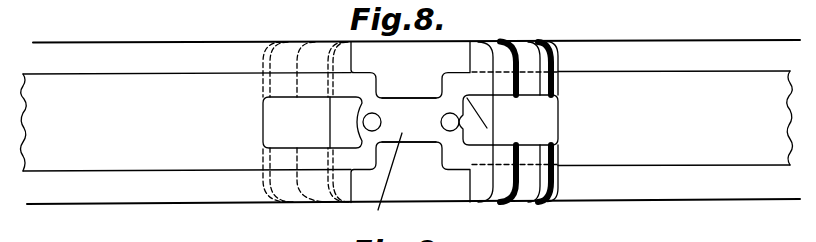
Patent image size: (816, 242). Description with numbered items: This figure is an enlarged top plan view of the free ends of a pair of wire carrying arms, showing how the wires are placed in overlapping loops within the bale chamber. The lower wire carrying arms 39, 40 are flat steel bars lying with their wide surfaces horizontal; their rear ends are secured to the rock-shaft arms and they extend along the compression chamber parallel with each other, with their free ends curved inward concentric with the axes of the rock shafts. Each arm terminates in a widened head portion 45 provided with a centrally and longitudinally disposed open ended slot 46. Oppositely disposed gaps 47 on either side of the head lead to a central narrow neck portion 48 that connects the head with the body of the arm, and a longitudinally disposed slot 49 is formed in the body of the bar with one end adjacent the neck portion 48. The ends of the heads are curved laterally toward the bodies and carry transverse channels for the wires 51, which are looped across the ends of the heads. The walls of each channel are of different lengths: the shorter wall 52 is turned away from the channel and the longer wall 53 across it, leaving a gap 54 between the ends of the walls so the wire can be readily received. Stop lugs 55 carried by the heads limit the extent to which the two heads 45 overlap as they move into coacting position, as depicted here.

The lower wire carrying arm 39 is at (183, 163).
The lower wire carrying arm 40 is at (742, 155).
The head portion 45 is at (353, 203).
The slot 46 is at (266, 172).
The gap 47 is at (409, 123).
The neck portion 48 is at (385, 180).
The slot 49 is at (410, 121).
The wire 51 is at (462, 72).
The shorter wall 52 is at (508, 41).
The longer wall 53 is at (608, 34).
The gap 54 is at (548, 43).
The stop lug 55 is at (383, 102).